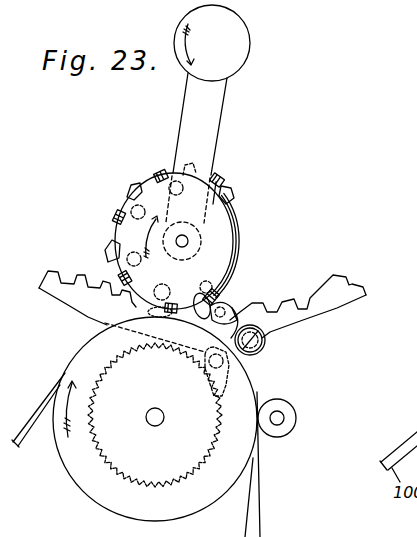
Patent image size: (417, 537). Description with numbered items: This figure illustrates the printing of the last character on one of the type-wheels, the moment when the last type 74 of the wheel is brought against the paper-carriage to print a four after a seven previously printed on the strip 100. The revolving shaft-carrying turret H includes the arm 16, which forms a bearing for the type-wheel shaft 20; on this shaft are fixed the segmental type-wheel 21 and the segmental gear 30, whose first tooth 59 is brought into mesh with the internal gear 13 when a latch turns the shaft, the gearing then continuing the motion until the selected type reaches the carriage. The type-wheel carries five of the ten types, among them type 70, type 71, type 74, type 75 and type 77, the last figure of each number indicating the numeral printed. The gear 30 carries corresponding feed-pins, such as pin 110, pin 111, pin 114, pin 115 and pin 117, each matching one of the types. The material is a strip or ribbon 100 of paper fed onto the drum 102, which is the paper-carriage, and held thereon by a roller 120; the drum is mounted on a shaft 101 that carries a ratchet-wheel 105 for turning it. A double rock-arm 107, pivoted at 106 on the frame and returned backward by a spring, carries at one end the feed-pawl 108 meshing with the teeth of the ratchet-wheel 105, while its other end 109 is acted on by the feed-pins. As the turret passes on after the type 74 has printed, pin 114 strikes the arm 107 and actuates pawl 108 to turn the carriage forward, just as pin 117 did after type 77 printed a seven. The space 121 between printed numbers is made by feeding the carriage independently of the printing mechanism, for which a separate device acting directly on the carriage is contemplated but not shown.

The revolving shaft-carrying turret H is at (243, 45).
The arm 16 is at (212, 110).
The type-wheel shaft 20 is at (189, 241).
The segmental gear 30 is at (241, 232).
The feed-pin 117 is at (174, 172).
The type 75 is at (155, 174).
The first tooth 59 is at (226, 177).
The segmental type-wheel 21 is at (233, 193).
The type 77 is at (219, 203).
The feed-pin 115 is at (125, 202).
The type 70 is at (113, 217).
The feed-pin 110 is at (110, 262).
The type 71 is at (131, 280).
The type 74 is at (173, 304).
The feed-pin 114 is at (222, 296).
The feed-pin 111 is at (155, 329).
The arm of rock-arm 109 is at (240, 290).
The double rock-arm 107 is at (238, 315).
The feed-pawl 108 is at (226, 373).
The pivot 106 is at (266, 339).
The internal gear 13 is at (307, 300).
The drum 102 is at (88, 475).
The shaft 101 is at (149, 423).
The ratchet-wheel 105 is at (163, 474).
The strip or ribbon 100 is at (17, 446).
The space 121 is at (260, 520).
The roller 120 is at (283, 432).